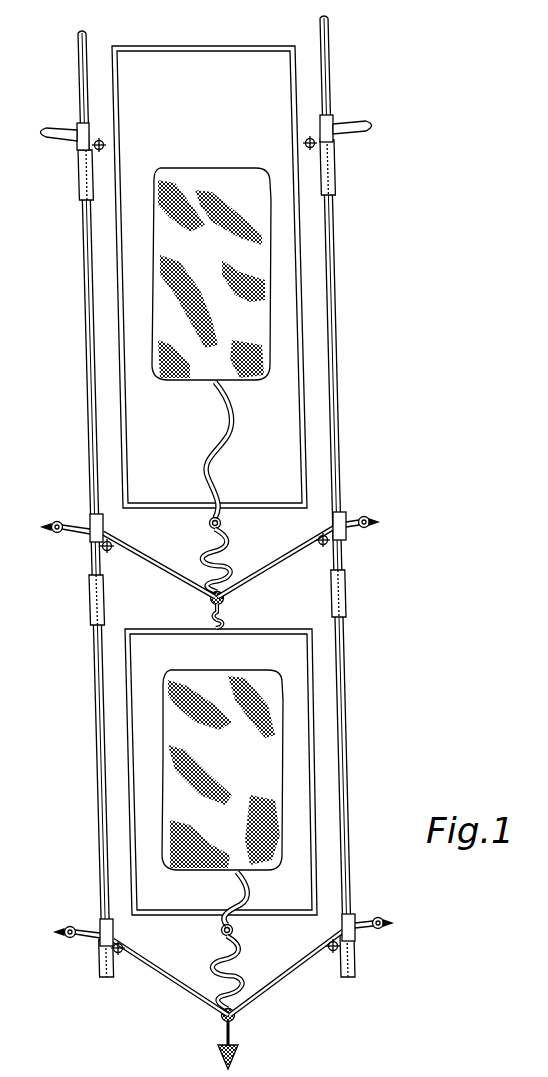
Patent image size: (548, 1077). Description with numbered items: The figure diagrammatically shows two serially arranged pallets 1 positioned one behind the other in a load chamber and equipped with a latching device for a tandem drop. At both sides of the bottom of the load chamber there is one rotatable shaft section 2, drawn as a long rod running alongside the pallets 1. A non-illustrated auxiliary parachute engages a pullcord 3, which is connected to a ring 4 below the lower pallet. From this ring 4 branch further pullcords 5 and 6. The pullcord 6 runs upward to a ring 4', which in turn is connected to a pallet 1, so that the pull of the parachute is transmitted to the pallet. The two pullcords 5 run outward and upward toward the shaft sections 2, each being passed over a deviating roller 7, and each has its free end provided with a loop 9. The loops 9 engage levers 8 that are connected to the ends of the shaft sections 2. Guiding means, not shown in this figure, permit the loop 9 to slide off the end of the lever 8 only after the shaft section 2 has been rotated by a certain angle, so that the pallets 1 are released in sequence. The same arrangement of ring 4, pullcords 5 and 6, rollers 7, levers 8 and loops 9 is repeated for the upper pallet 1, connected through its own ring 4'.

The pallet 1 is at (287, 275).
The rotatable shaft section 2 is at (90, 342).
The pullcord 3 is at (233, 1040).
The ring 4 is at (205, 823).
The ring 4' is at (248, 701).
The pullcord 5 is at (158, 564).
The pullcord 6 is at (210, 558).
The deviating roller 7 is at (82, 120).
The lever 8 is at (74, 133).
The loop 9 is at (56, 523).